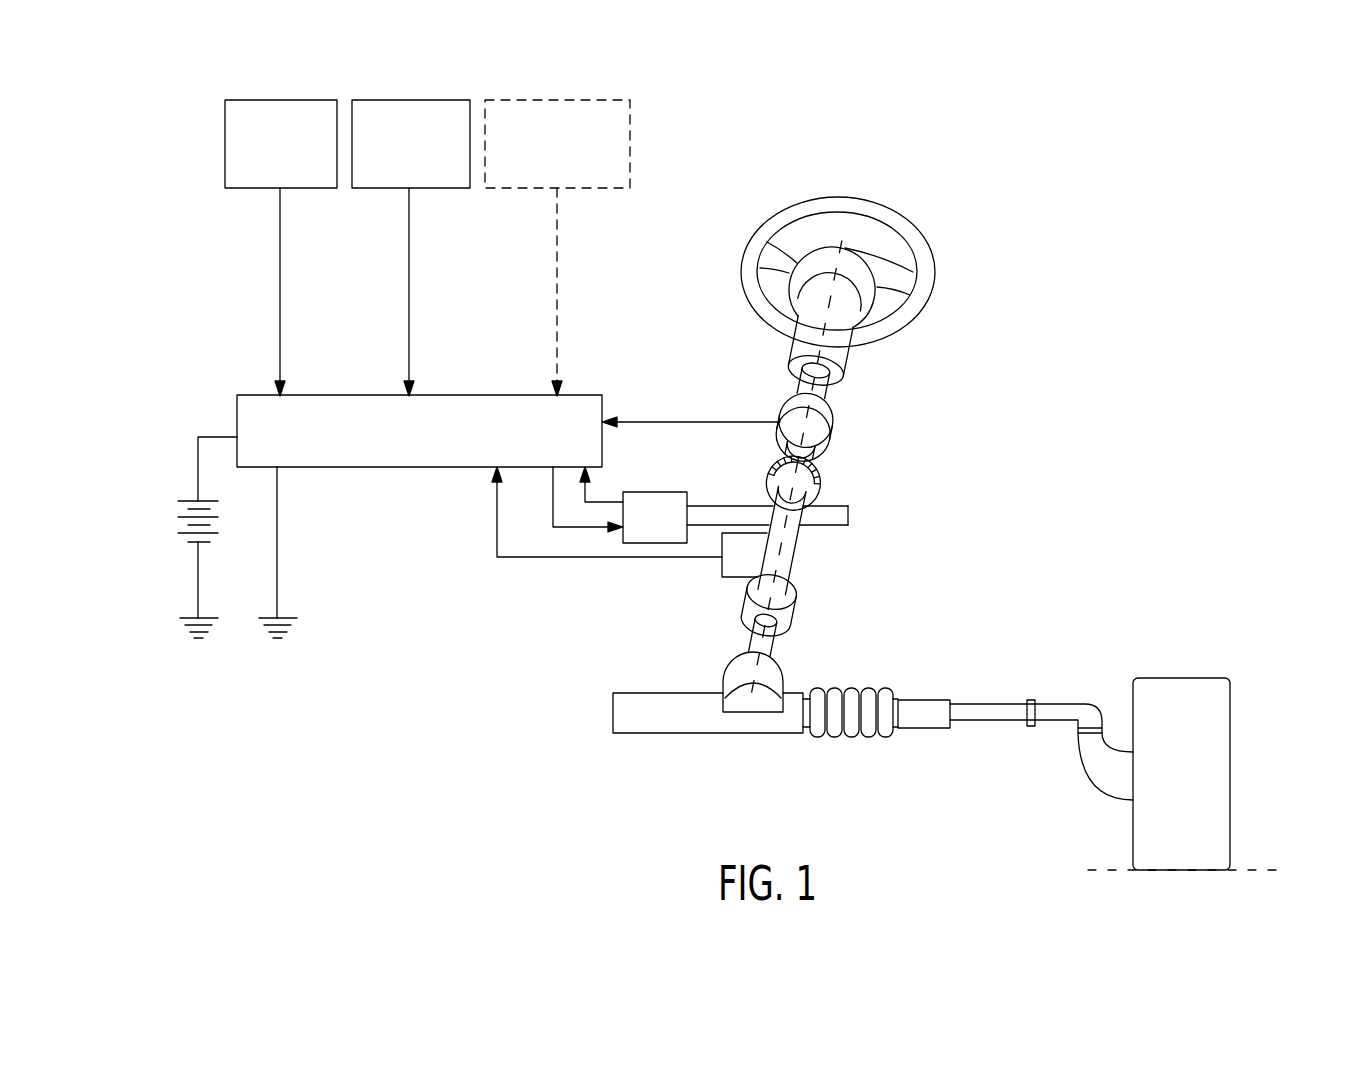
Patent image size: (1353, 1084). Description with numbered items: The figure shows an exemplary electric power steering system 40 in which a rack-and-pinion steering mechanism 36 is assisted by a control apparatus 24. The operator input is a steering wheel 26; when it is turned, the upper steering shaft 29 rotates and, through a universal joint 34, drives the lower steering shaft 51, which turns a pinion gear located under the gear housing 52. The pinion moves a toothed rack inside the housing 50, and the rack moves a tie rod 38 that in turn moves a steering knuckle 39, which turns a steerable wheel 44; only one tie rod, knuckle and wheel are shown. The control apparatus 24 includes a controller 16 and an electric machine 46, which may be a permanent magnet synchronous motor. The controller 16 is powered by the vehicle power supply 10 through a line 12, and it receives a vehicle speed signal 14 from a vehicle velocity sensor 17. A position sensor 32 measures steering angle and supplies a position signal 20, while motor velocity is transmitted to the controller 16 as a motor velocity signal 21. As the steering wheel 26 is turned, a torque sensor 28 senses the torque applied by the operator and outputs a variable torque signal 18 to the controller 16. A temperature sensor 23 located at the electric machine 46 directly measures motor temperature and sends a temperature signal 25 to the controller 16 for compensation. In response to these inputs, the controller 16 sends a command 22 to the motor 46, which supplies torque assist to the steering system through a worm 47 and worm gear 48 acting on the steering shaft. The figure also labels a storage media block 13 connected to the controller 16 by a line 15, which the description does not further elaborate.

The vehicle power supply 10 is at (173, 520).
The line 12 is at (212, 433).
The storage media 13 is at (248, 190).
The vehicle speed signal 14 is at (409, 316).
The storage media connection 15 is at (280, 316).
The controller 16 is at (405, 468).
The vehicle velocity sensor 17 is at (365, 190).
The torque signal 18 is at (700, 420).
The position signal 20 is at (610, 560).
The motor velocity signal 21 is at (583, 492).
The command 22 is at (568, 531).
The temperature sensor 23 is at (510, 190).
The control apparatus 24 is at (1020, 410).
The temperature signal 25 is at (557, 312).
The steering wheel 26 is at (892, 227).
The torque sensor 28 is at (830, 422).
The upper steering shaft 29 is at (822, 393).
The position sensor 32 is at (720, 568).
The universal joint 34 is at (790, 600).
The steering mechanism 36 is at (882, 683).
The tie rod 38 is at (985, 713).
The steering knuckle 39 is at (1103, 762).
The electric power steering system 40 is at (1097, 505).
The steerable wheel 44 is at (1168, 693).
The electric machine 46 is at (665, 492).
The worm 47 is at (840, 517).
The worm gear 48 is at (807, 477).
The housing 50 is at (653, 720).
The lower steering shaft 51 is at (768, 650).
The gear housing 52 is at (737, 677).